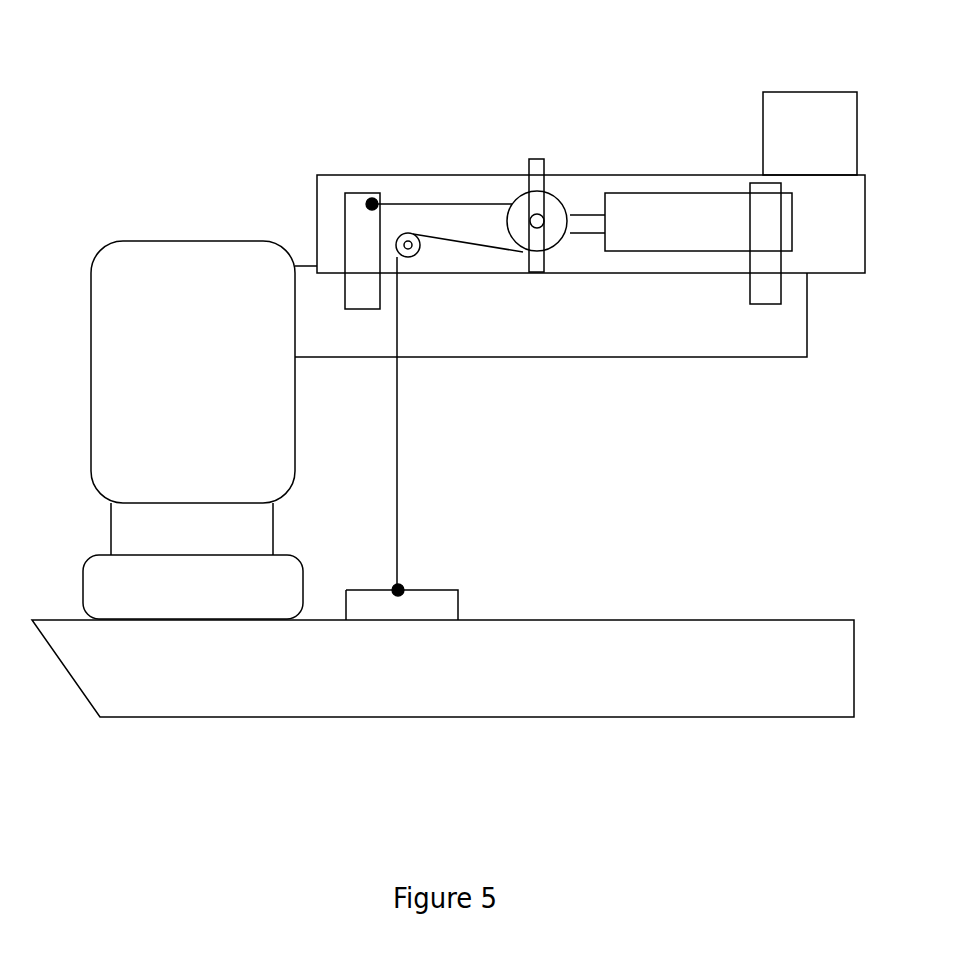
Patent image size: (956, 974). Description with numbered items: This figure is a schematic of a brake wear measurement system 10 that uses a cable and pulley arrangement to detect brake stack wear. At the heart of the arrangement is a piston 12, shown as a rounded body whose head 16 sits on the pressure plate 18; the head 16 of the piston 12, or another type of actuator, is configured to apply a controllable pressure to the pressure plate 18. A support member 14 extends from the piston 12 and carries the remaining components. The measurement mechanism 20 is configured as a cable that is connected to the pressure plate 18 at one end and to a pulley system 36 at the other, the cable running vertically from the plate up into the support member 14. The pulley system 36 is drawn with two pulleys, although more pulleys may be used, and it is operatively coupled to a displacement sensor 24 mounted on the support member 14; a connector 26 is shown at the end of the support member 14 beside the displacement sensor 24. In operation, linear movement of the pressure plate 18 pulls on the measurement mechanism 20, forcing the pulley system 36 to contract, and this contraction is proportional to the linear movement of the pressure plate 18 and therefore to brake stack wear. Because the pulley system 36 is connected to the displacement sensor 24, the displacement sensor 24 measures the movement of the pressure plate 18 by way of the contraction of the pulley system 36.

The brake wear measurement system 10 is at (238, 70).
The piston 12 is at (128, 438).
The support member 14 is at (756, 339).
The head 16 is at (113, 585).
The pressure plate 18 is at (166, 718).
The measurement mechanism 20 is at (398, 455).
The displacement sensor 24 is at (663, 225).
The connector 26 is at (793, 92).
The pulley system 36 is at (557, 213).